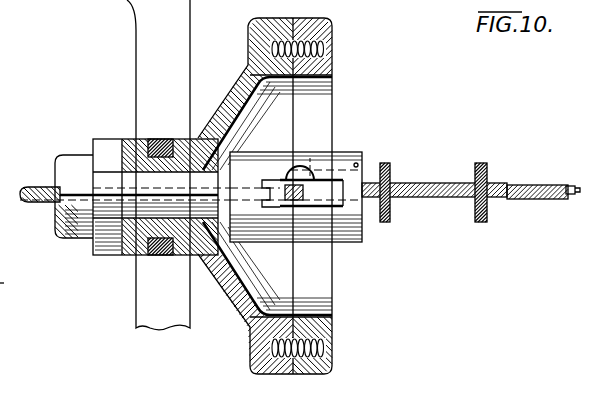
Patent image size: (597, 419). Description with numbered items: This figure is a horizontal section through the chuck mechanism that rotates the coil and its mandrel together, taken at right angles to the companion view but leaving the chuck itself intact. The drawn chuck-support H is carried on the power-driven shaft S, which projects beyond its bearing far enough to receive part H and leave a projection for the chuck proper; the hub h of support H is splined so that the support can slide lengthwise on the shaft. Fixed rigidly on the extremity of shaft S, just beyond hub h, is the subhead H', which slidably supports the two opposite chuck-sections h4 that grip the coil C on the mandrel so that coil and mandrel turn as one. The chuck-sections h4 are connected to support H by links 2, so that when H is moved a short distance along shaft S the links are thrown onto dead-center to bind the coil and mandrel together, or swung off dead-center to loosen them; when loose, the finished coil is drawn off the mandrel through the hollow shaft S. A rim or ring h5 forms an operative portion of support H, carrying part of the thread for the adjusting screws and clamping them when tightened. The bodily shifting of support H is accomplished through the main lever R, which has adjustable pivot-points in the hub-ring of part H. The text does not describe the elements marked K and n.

The main lever R is at (158, 165).
The hub h is at (135, 138).
The chuck-support H is at (265, 196).
The rim or ring h5 is at (335, 71).
The shaft S is at (60, 182).
The subhead H' is at (311, 181).
The links 2 is at (280, 179).
The chuck-sections h4 is at (335, 200).
The coil C is at (522, 184).
The collars K is at (475, 172).
The rod tip n is at (577, 191).